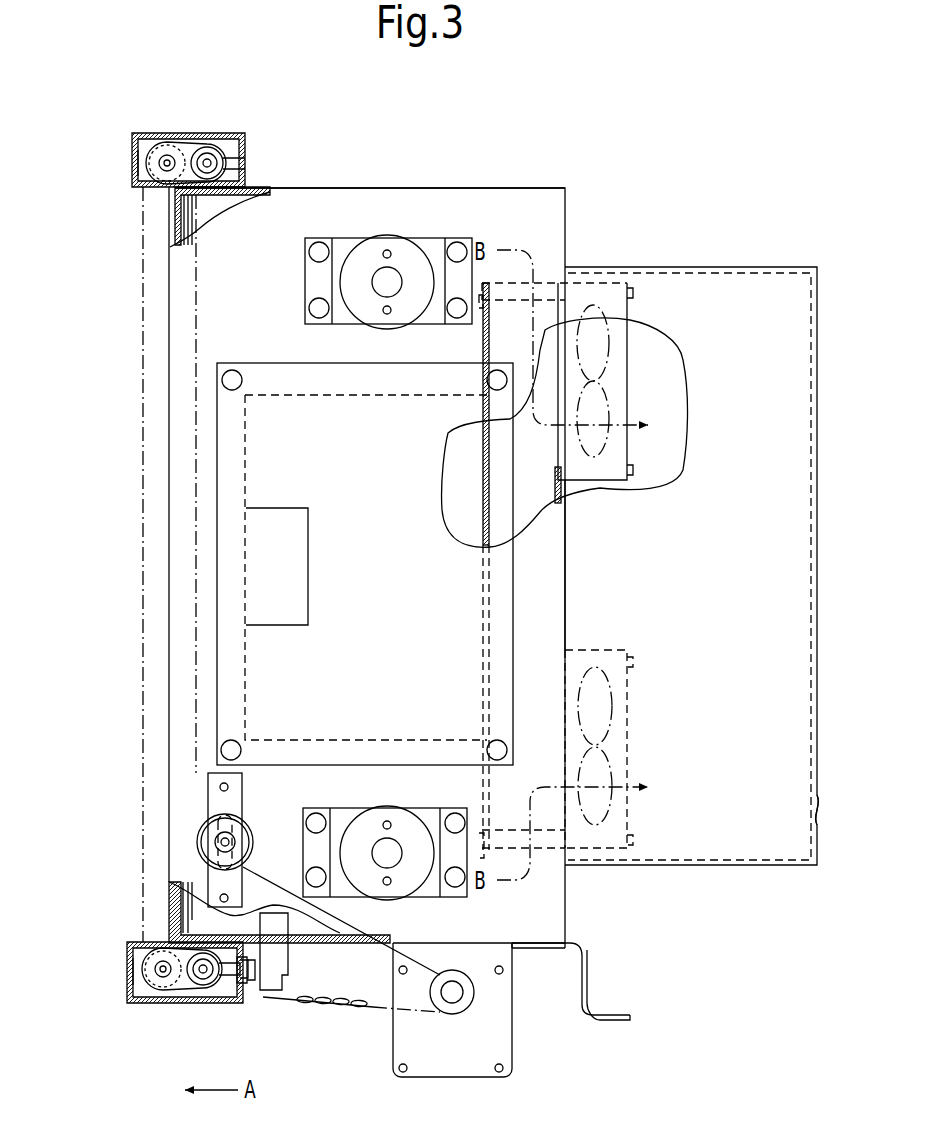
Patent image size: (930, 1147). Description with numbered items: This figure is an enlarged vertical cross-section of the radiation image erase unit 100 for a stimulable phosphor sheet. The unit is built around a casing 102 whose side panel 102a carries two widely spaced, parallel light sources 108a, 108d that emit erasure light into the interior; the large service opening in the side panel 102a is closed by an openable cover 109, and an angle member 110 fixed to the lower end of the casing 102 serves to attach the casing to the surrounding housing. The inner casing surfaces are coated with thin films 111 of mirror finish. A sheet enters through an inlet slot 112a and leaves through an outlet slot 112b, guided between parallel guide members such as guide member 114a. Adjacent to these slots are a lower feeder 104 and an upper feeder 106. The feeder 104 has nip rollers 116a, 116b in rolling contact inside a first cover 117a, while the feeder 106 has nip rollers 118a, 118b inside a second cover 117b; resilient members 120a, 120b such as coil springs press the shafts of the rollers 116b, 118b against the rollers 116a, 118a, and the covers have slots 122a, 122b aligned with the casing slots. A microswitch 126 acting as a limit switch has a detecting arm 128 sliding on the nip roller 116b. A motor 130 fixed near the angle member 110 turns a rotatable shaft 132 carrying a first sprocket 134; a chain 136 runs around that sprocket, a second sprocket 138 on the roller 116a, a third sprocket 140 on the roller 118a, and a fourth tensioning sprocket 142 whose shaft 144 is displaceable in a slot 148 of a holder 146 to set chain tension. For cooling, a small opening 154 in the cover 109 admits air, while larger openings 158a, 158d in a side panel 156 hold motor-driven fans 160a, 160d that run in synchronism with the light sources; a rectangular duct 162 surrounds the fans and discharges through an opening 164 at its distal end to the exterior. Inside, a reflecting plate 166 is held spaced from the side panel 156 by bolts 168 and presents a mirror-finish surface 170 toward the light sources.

The radiation image erase unit 100 is at (570, 456).
The casing 102 is at (571, 215).
The side panel 102a is at (367, 220).
The feeder 104 is at (170, 999).
The feeder 106 is at (194, 115).
The light source 108a is at (409, 233).
The light source 108d is at (411, 898).
The openable cover 109 is at (267, 670).
The angle member 110 is at (612, 1010).
The thin films 111 is at (205, 198).
The inlet slot 112a is at (173, 935).
The outlet slot 112b is at (176, 200).
The guide member 114a is at (168, 895).
The nip roller 116a is at (163, 980).
The nip roller 116b is at (205, 985).
The first cover 117a is at (225, 976).
The second cover 117b is at (245, 178).
The nip roller 118a is at (160, 148).
The nip roller 118b is at (222, 155).
The resilient member 120a is at (130, 962).
The resilient member 120b is at (133, 140).
The slot 122a is at (183, 1005).
The slot 122b is at (190, 130).
The microswitch 126 is at (290, 978).
The detecting arm 128 is at (283, 1000).
The motor 130 is at (472, 1078).
The rotatable shaft 132 is at (457, 992).
The first sprocket 134 is at (470, 1008).
The chain 136 is at (200, 500).
The second sprocket 138 is at (137, 1000).
The third sprocket 140 is at (130, 160).
The fourth tensioning sprocket 142 is at (254, 853).
The shaft 144 is at (213, 840).
The holder 146 is at (243, 770).
The slot 148 is at (232, 815).
The opening 154 is at (305, 590).
The side panel 156 is at (565, 560).
The opening 158a is at (574, 319).
The opening 158d is at (597, 754).
The motor-driven fan 160a is at (617, 445).
The motor-driven fan 160d is at (613, 705).
The duct 162 is at (746, 263).
The opening 164 is at (817, 822).
The reflecting plate 166 is at (495, 525).
The bolts 168 is at (550, 282).
The surface 170 is at (440, 486).